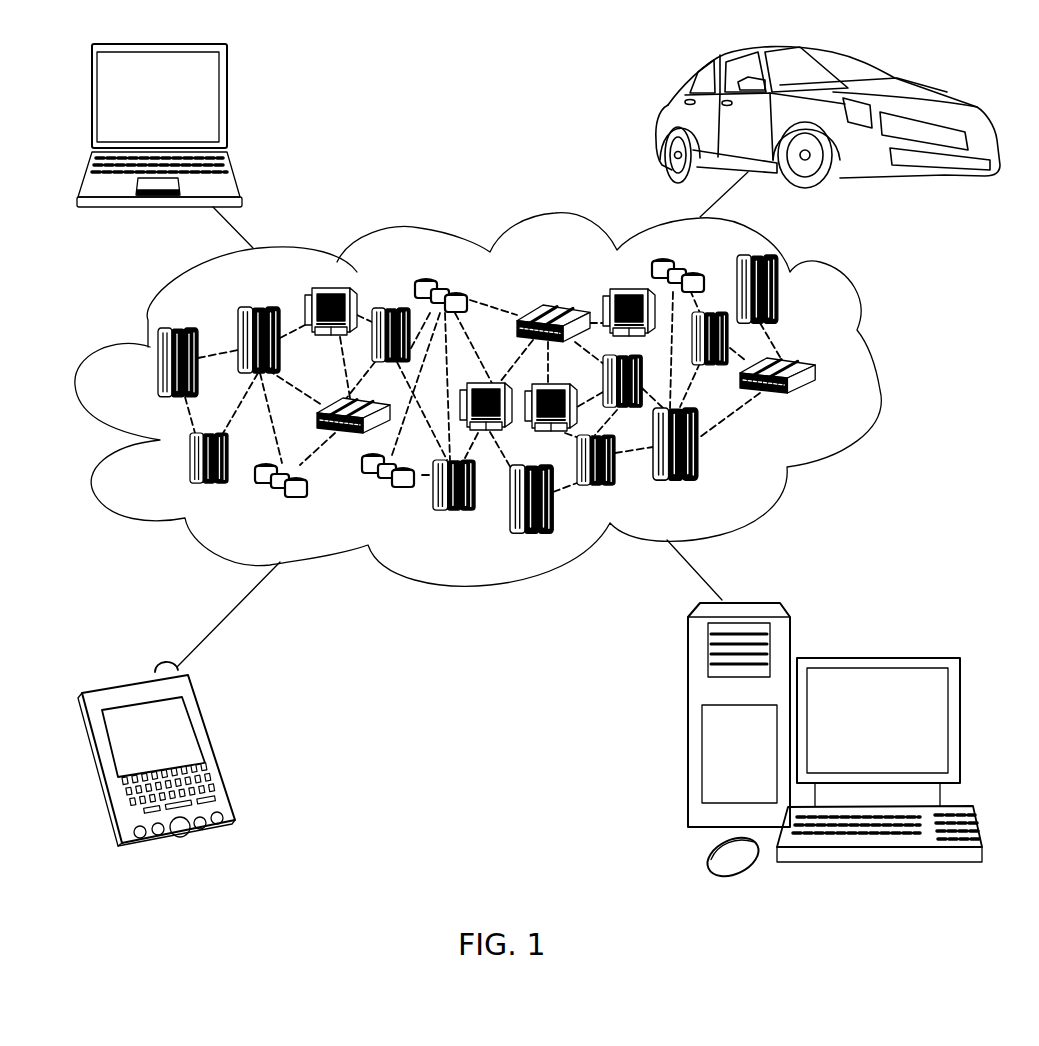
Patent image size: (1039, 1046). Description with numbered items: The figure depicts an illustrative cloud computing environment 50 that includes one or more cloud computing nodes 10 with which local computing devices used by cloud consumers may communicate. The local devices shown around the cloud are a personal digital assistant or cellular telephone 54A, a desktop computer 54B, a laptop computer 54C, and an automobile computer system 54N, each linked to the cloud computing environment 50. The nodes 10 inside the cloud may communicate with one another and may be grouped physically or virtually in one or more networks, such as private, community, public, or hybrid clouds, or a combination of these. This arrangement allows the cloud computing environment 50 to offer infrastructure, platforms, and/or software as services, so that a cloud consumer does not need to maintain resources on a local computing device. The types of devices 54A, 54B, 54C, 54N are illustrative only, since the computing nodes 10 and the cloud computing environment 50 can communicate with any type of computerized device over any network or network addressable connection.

The cloud computing nodes 10 is at (822, 404).
The cloud computing environment 50 is at (876, 373).
The personal digital assistant or cellular telephone 54A is at (218, 752).
The desktop computer 54B is at (873, 657).
The laptop computer 54C is at (228, 104).
The automobile computer system 54N is at (662, 122).